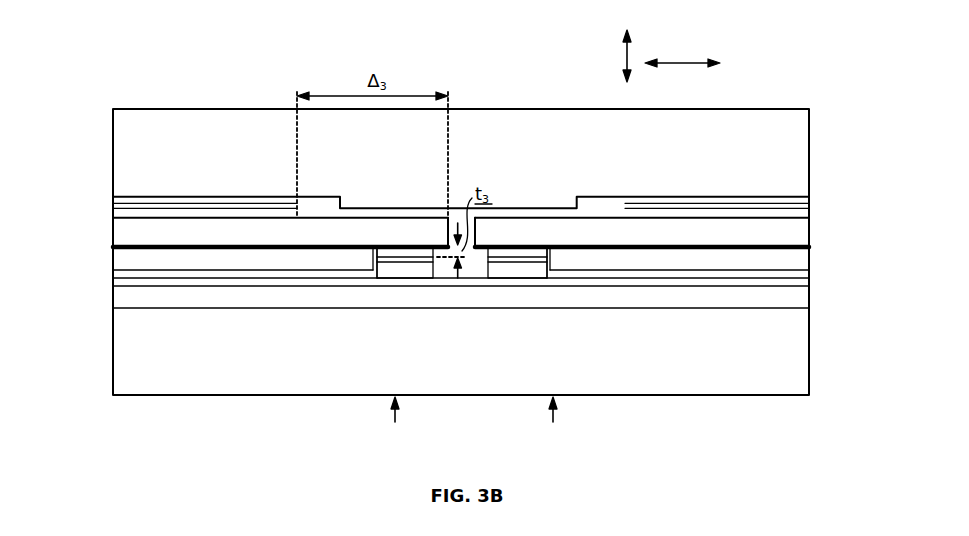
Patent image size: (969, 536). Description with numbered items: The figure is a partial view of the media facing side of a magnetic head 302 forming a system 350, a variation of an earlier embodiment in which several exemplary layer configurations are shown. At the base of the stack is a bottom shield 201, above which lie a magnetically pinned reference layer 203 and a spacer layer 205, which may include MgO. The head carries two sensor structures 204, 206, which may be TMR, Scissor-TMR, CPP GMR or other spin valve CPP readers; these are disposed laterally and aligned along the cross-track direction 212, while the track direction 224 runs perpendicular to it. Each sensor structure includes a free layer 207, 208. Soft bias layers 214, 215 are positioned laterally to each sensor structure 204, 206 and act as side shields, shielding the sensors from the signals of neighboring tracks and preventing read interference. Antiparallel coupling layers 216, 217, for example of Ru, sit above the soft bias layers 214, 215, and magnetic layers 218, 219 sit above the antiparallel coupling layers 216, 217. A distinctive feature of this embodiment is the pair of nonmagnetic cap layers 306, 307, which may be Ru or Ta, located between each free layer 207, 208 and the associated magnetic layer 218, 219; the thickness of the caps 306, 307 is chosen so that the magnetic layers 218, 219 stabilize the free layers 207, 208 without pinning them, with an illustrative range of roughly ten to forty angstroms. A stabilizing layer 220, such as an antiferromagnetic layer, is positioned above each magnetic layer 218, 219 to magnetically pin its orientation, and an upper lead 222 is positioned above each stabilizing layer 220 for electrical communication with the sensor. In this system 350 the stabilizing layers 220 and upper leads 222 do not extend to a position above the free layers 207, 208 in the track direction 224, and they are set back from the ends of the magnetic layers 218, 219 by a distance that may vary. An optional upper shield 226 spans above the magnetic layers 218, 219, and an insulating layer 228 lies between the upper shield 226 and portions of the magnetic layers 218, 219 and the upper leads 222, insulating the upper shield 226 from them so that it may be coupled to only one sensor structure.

The system 350 is at (88, 62).
The magnetic head 302 is at (80, 381).
The upper shield 226 is at (470, 161).
The insulating layer 228 is at (125, 196).
The upper lead 222 is at (113, 203).
The stabilizing layer 220 is at (113, 218).
The magnetic layer 218 is at (241, 241).
The magnetic layer 219 is at (640, 241).
The antiparallel coupling layer 216 is at (113, 247).
The antiparallel coupling layer 217 is at (809, 247).
The soft bias layer 214 is at (113, 261).
The soft bias layer 215 is at (809, 258).
The magnetically pinned reference layer 203 is at (113, 283).
The spacer layer 205 is at (809, 302).
The bottom shield 201 is at (447, 368).
The nonmagnetic cap layer 306 is at (373, 258).
The free layer 207 is at (427, 262).
The free layer 208 is at (500, 262).
The nonmagnetic cap layer 307 is at (549, 250).
The track direction 224 is at (607, 56).
The cross-track direction 212 is at (665, 59).
The sensor structure 204 is at (395, 422).
The sensor structure 206 is at (555, 422).